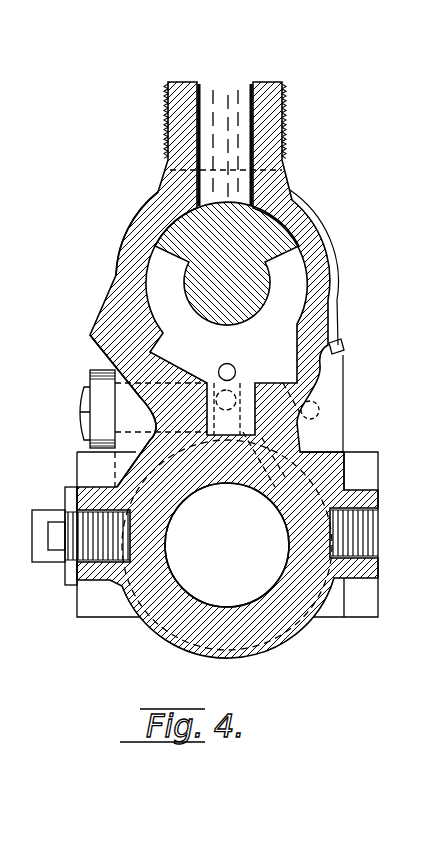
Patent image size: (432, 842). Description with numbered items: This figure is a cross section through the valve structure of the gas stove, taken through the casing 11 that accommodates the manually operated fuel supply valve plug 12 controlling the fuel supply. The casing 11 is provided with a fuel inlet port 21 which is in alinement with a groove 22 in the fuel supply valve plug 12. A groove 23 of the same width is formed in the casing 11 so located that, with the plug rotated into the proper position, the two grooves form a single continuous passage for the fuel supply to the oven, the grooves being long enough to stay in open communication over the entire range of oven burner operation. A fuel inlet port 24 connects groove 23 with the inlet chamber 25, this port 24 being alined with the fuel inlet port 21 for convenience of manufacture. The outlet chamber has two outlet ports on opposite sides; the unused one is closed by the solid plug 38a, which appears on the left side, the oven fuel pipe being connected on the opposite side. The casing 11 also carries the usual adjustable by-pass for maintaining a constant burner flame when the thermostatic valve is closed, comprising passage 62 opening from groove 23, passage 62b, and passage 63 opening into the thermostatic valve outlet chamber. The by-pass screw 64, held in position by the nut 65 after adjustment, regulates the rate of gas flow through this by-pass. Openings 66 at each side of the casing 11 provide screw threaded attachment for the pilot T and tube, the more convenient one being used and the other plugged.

The casing 11 is at (133, 238).
The fuel supply valve plug 12 is at (172, 230).
The fuel inlet port 21 is at (216, 93).
The groove 22 is at (155, 277).
The groove 23 is at (115, 304).
The fuel inlet port 24 is at (207, 390).
The inlet chamber 25 is at (188, 613).
The plug 38a is at (46, 510).
The passage 62 is at (231, 366).
The passage 62b is at (273, 397).
The passage 63 is at (250, 466).
The by-pass screw 64 is at (80, 410).
The nut 65 is at (95, 372).
The opening 66 is at (330, 530).